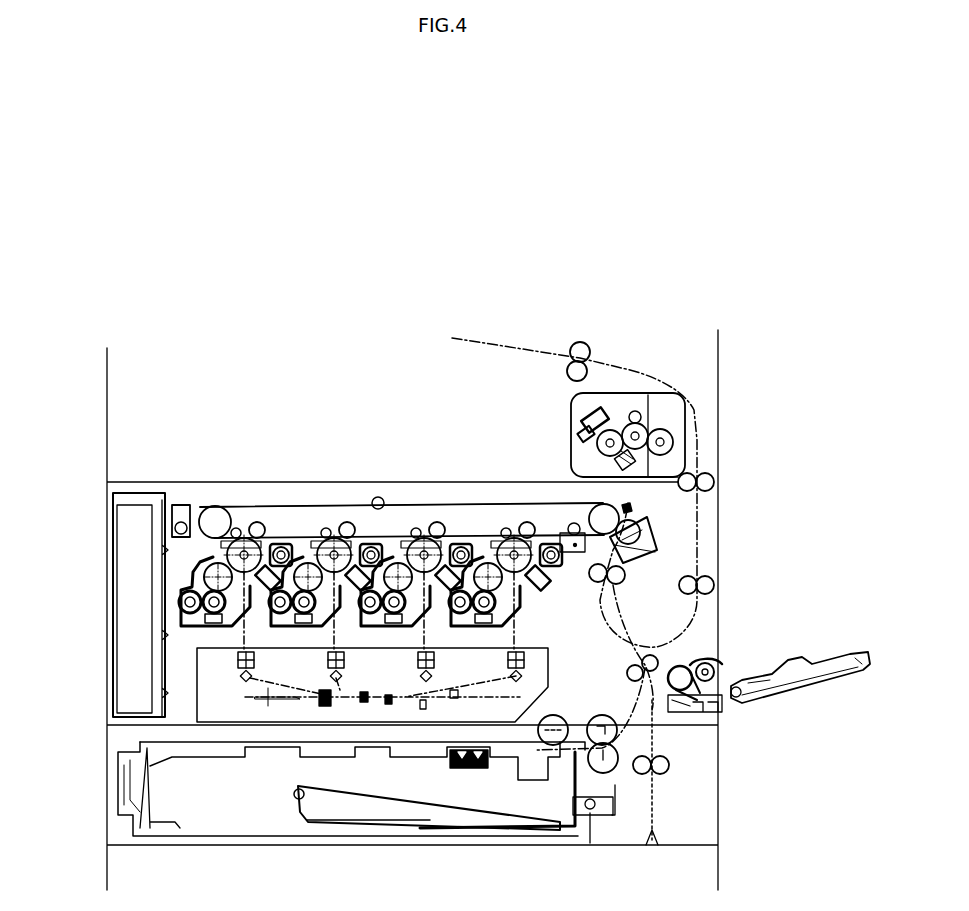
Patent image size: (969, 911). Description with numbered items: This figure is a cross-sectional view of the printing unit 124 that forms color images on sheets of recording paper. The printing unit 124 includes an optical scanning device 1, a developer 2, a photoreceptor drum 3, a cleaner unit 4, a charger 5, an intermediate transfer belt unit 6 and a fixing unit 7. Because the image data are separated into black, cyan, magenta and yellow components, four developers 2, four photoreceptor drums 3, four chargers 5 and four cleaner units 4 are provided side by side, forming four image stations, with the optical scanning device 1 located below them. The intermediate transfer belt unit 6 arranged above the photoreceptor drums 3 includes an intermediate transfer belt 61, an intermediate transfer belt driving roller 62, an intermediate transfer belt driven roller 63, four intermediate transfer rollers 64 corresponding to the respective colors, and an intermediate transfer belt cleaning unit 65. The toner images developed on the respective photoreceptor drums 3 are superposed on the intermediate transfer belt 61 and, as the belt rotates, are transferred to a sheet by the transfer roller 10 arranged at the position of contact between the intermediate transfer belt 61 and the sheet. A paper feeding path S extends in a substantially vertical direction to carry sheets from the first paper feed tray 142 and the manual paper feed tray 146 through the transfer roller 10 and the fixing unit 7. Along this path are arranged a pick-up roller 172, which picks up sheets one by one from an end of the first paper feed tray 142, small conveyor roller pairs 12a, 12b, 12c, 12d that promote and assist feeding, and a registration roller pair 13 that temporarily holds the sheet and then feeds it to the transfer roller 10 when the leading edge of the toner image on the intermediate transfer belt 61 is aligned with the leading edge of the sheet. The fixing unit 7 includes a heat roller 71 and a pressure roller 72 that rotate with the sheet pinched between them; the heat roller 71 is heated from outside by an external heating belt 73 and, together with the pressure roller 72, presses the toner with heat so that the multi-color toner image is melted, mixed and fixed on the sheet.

The printing unit 124 is at (400, 320).
The conveyor roller pair 12b is at (581, 342).
The heat roller 71 is at (642, 425).
The external heating belt 73 is at (628, 416).
The fixing unit 7 is at (688, 412).
The pressure roller 72 is at (670, 442).
The conveyor roller pair 12c is at (715, 482).
The intermediate transfer belt cleaning unit 65 is at (190, 508).
The intermediate transfer belt driven roller 63 is at (210, 510).
The intermediate transfer belt unit 6 is at (489, 496).
The intermediate transfer belt 61 is at (517, 528).
The intermediate transfer belt driving roller 62 is at (618, 510).
The transfer roller 10 is at (640, 531).
The registration roller pair 13 is at (625, 575).
The conveyor roller pair 12d is at (715, 585).
The manual paper feed tray 146 is at (826, 658).
The conveyor roller pair 12a is at (658, 660).
The paper feeding path S is at (612, 632).
The optical scanning device 1 is at (546, 680).
The pick-up roller 172 is at (562, 722).
The first paper feed tray 142 is at (96, 792).
The developer 2 is at (206, 569).
The photoreceptor drum 3 is at (510, 540).
The intermediate transfer roller 64 is at (529, 527).
The cleaner unit 4 is at (555, 558).
The charger 5 is at (532, 585).